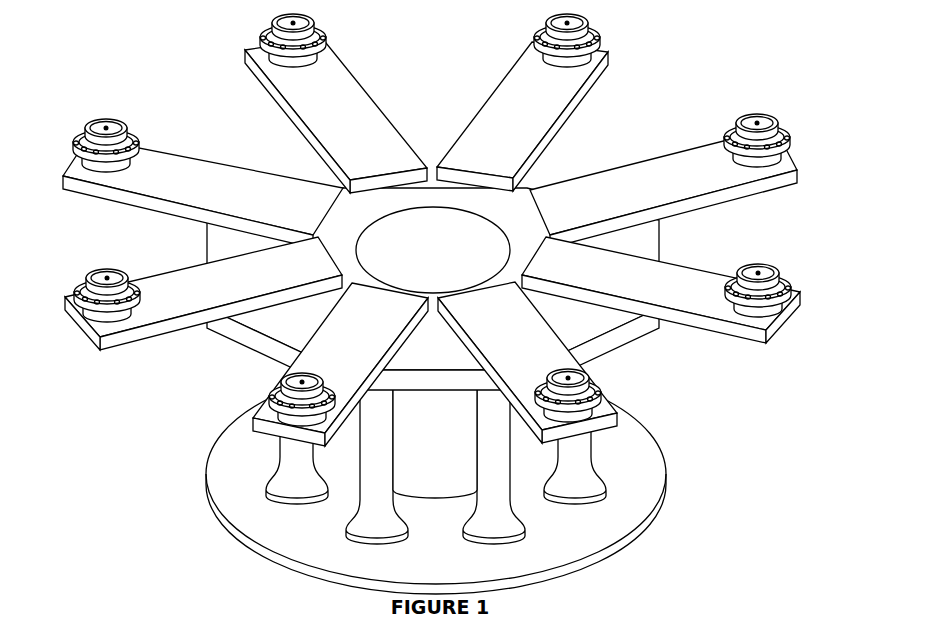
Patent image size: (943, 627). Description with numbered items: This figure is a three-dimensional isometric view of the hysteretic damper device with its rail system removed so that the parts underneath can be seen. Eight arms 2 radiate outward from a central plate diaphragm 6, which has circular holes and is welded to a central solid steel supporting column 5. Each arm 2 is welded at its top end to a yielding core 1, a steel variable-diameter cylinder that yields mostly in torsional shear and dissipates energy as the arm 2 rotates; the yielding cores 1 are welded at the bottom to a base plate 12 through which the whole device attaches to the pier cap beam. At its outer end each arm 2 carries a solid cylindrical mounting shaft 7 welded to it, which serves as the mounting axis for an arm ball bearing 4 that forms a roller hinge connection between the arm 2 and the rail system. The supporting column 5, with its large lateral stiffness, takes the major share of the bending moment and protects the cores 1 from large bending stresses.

The yielding core 1 is at (436, 467).
The arm 2 is at (431, 242).
The arm ball bearing 4 is at (336, 31).
The supporting column 5 is at (435, 444).
The plate diaphragm 6 is at (433, 289).
The mounting shaft 7 is at (288, 23).
The base plate 12 is at (436, 479).